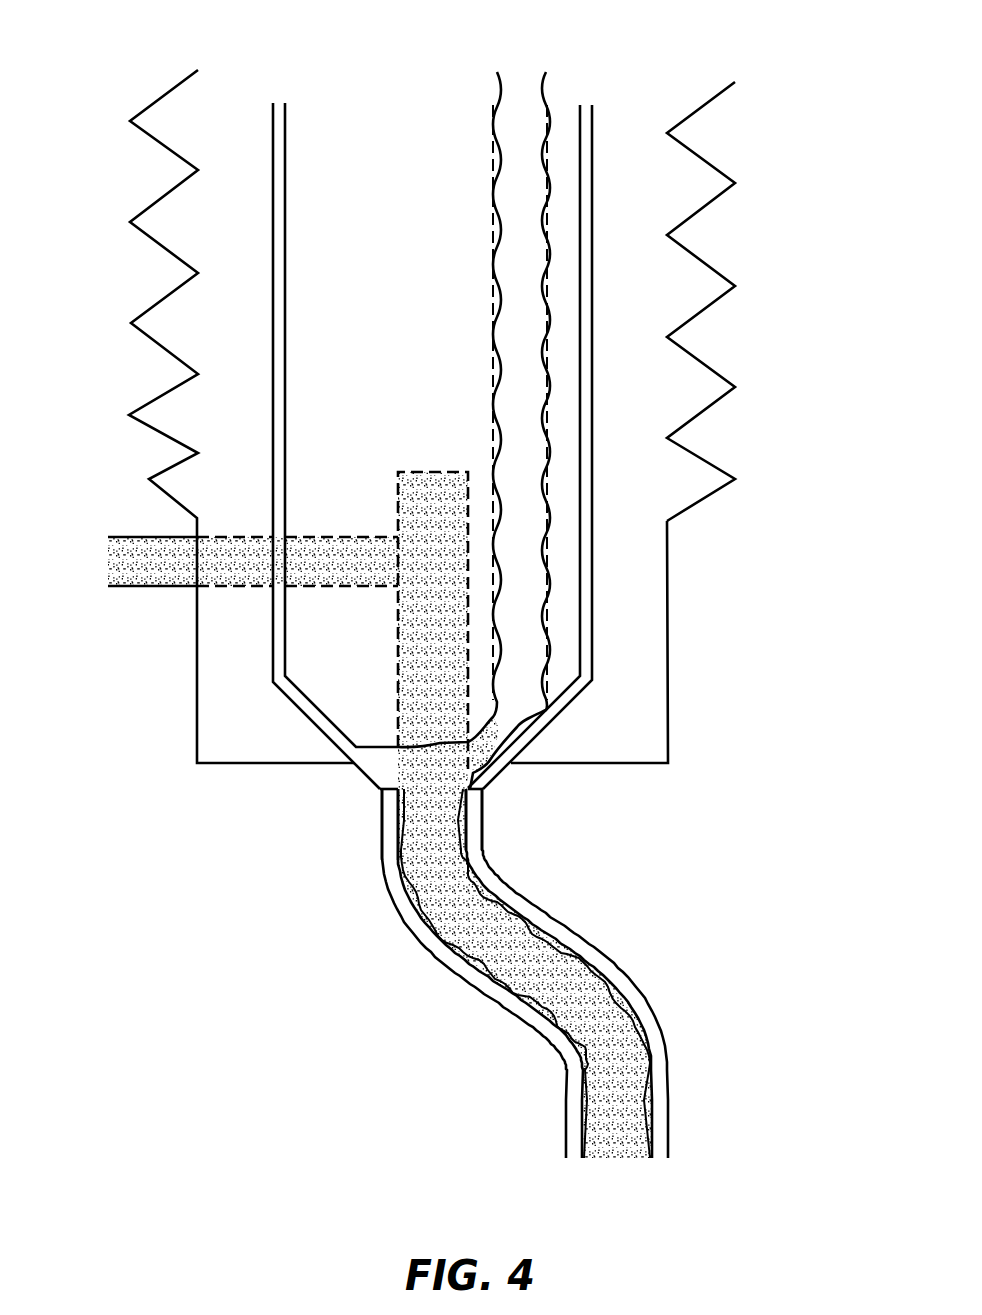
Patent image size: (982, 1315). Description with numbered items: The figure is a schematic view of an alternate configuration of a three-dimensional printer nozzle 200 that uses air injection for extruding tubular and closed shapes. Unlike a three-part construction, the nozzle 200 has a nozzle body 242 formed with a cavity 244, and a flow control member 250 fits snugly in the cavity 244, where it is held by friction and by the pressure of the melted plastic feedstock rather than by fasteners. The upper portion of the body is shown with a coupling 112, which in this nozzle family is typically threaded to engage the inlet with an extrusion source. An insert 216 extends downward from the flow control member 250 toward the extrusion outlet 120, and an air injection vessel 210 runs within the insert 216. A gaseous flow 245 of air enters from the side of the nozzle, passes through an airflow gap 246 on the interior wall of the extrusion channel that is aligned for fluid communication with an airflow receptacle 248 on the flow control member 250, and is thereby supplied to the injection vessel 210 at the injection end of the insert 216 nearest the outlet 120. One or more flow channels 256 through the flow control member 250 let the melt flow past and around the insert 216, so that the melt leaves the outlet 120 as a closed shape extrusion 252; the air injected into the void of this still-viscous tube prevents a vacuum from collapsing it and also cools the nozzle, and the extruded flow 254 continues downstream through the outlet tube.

The coupling 112 is at (705, 157).
The nozzle 200 is at (478, 416).
The flow control member 250 is at (390, 227).
The cavity 244 is at (593, 597).
The flow channels 256 is at (524, 76).
The gaseous flow 245 is at (100, 557).
The airflow gap 246 is at (240, 536).
The airflow receptacle 248 is at (340, 536).
The insert 216 is at (400, 657).
The air injection vessel 210 is at (427, 723).
The nozzle body 242 is at (668, 687).
The extrusion outlet 120 is at (362, 808).
The closed shape extrusion 252 is at (628, 963).
The outlet flow 254 is at (625, 1168).